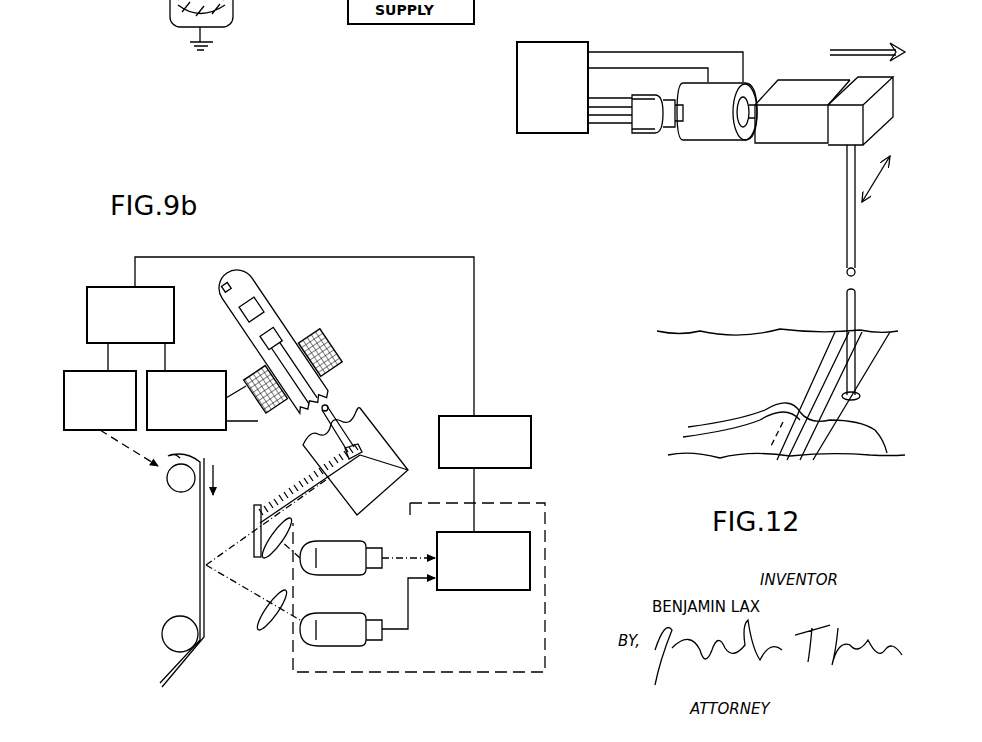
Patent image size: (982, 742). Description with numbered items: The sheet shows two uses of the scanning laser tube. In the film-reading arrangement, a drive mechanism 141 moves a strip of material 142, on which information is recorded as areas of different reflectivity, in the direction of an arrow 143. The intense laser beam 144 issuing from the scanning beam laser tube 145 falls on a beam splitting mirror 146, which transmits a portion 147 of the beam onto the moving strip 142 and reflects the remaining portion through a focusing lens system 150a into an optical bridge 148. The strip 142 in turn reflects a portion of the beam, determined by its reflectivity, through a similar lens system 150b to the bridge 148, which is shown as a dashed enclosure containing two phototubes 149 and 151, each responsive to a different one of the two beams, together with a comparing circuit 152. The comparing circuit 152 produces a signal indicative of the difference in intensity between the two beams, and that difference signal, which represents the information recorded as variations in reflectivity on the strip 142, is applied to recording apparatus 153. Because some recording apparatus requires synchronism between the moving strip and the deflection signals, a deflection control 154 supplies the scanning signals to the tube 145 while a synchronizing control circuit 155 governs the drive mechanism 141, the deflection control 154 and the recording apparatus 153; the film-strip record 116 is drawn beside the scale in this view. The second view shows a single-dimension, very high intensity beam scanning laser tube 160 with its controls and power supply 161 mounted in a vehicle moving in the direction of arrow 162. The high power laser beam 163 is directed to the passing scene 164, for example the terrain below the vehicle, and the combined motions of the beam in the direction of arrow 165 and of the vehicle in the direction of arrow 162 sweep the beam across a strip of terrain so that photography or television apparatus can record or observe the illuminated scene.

In FIG. 9B, the film strip with scale 116 is at (355, 460).
In FIG. 9B, the drive mechanism 141 is at (64, 385).
In FIG. 9B, the strip of material 142 is at (197, 527).
In FIG. 9B, the arrow 143 is at (226, 466).
In FIG. 9B, the laser beam 144 is at (292, 506).
In FIG. 9B, the scanning beam laser tube 145 is at (300, 322).
In FIG. 9B, the beam splitting mirror 146 is at (257, 505).
In FIG. 9B, the transmitted portion of laser beam 147 is at (232, 546).
In FIG. 9B, the optical bridge 148 is at (332, 672).
In FIG. 9B, the phototube 149 is at (323, 577).
In FIG. 9B, the focusing lens system 150a is at (270, 556).
In FIG. 9B, the lens system 150b is at (266, 626).
In FIG. 9B, the phototube 151 is at (340, 645).
In FIG. 9B, the comparing circuit 152 is at (517, 592).
In FIG. 9B, the recording apparatus 153 is at (500, 416).
In FIG. 9B, the deflection control 154 is at (210, 362).
In FIG. 9B, the synchronizing control circuit 155 is at (113, 287).
In FIG. 12, the beam scanning laser tube 160 is at (768, 70).
In FIG. 12, the controls and power supply 161 is at (575, 135).
In FIG. 12, the arrow 162 is at (864, 50).
In FIG. 12, the high power laser beam 163 is at (855, 245).
In FIG. 12, the passing scene 164 is at (781, 394).
In FIG. 12, the arrow 165 is at (872, 184).